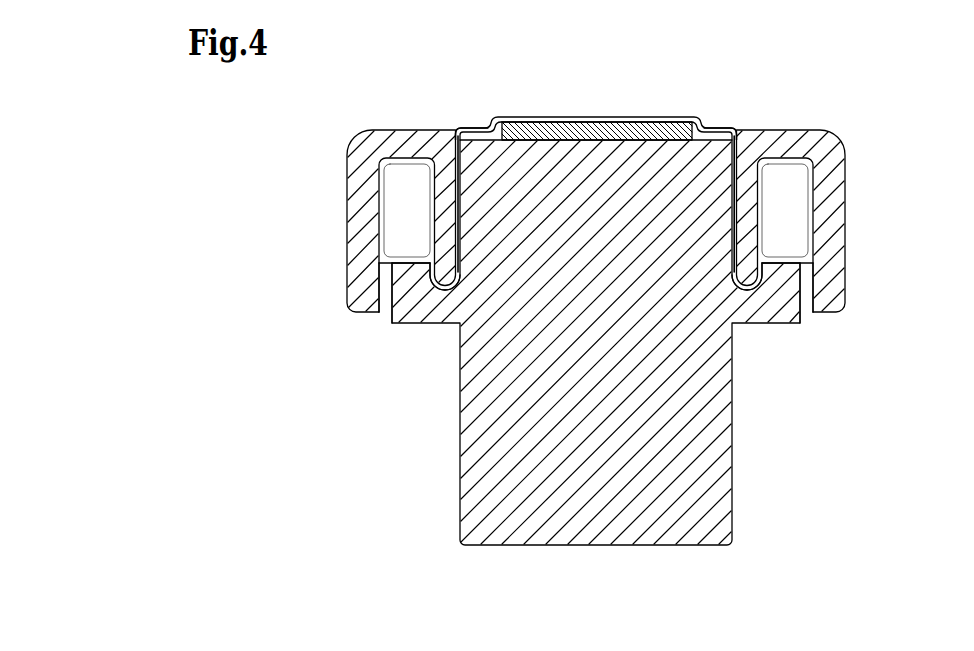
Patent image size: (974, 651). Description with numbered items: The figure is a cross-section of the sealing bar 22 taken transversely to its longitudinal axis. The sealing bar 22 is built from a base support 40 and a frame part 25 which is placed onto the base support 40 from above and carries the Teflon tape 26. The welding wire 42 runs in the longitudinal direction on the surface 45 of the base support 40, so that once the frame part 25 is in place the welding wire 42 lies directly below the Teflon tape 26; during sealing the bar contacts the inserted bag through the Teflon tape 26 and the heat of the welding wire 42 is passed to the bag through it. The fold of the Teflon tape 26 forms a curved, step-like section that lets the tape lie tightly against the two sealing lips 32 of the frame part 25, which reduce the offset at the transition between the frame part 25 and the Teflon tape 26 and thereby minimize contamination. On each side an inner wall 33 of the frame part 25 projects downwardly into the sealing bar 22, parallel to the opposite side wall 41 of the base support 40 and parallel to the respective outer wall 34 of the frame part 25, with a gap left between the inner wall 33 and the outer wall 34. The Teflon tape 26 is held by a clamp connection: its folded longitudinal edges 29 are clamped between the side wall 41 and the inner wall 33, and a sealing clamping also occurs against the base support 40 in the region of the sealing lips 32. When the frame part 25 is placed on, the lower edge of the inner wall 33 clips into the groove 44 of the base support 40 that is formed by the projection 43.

The sealing bar 22 is at (288, 405).
The frame part 25 is at (350, 147).
The Teflon tape 26 is at (563, 117).
The folded longitudinal edges 29 is at (461, 244).
The sealing lips 32 is at (471, 128).
The inner wall 33 is at (443, 190).
The outer wall 34 is at (350, 255).
The base support 40 is at (722, 511).
The side wall 41 is at (462, 203).
The welding wire 42 is at (662, 122).
The projection 43 is at (405, 312).
The groove 44 is at (450, 283).
The surface 45 is at (630, 124).